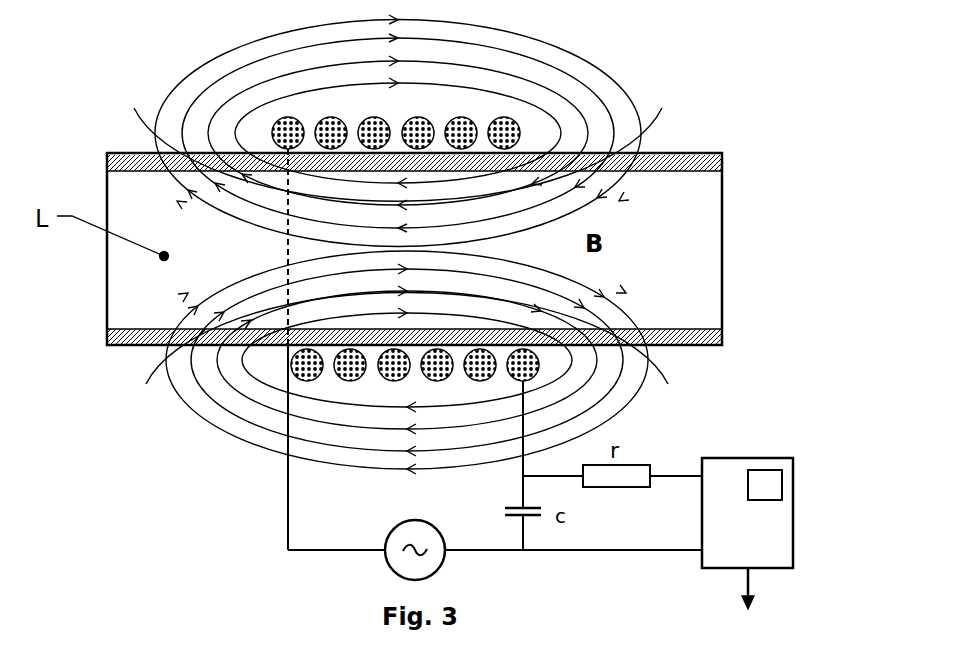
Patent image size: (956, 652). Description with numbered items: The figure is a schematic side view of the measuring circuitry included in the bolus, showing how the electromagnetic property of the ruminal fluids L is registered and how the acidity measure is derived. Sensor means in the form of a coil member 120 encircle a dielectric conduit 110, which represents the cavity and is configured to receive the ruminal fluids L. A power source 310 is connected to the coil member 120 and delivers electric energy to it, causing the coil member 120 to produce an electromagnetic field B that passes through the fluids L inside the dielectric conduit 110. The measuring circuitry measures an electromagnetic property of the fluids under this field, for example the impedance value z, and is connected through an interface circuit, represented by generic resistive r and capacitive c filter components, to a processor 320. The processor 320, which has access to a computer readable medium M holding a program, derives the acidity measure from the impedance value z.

The dielectric conduit 110 is at (678, 155).
The coil member 120 is at (274, 127).
The power source 310 is at (393, 529).
The processor 320 is at (735, 457).